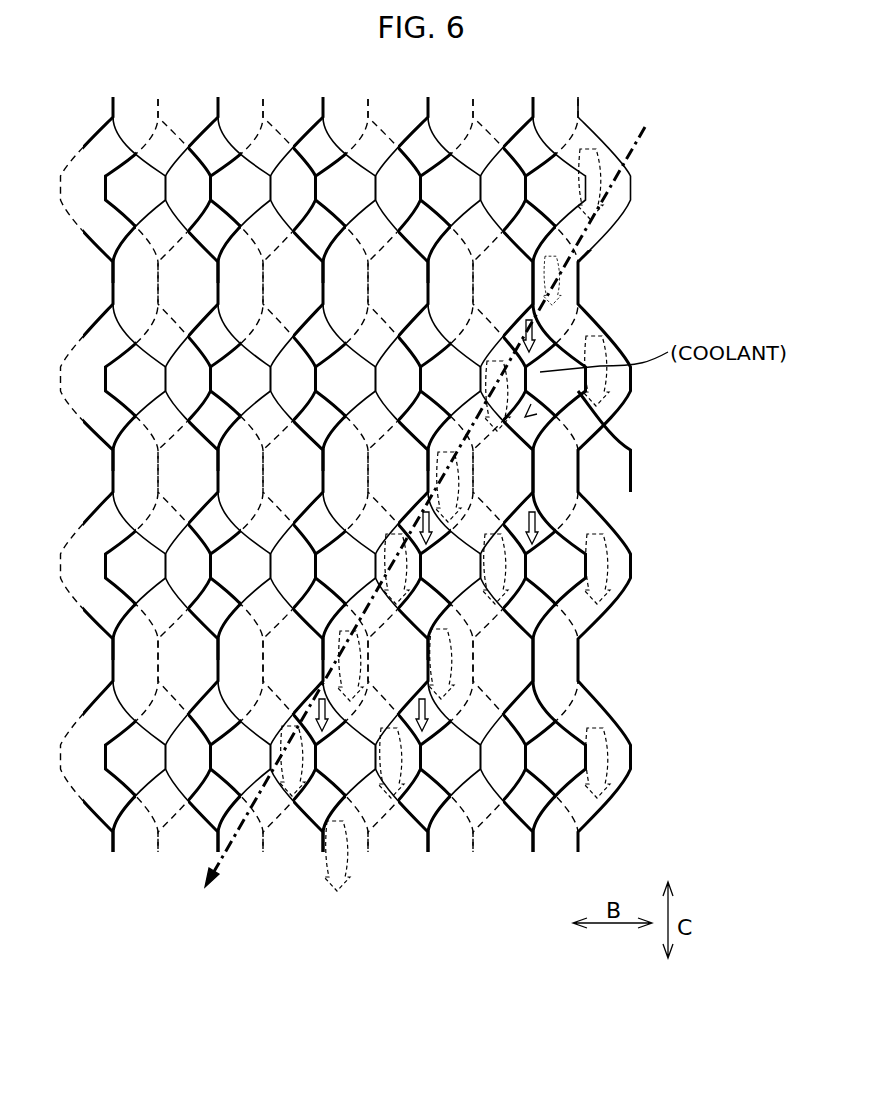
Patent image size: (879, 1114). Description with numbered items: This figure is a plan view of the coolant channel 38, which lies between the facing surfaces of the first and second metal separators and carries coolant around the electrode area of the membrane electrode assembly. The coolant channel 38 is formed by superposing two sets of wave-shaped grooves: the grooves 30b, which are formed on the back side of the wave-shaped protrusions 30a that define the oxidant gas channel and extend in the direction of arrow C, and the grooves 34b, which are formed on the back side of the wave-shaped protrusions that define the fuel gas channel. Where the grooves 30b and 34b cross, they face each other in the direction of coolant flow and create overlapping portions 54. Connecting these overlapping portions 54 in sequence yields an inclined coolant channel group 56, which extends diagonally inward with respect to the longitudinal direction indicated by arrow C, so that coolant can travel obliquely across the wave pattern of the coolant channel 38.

The inclined coolant channel group 56 is at (633, 163).
The wave-shaped protrusions 30a is at (606, 262).
The overlapping portions 54 is at (560, 283).
The grooves 30b is at (608, 330).
The grooves 34b is at (525, 417).
The coolant channel 38 is at (592, 492).